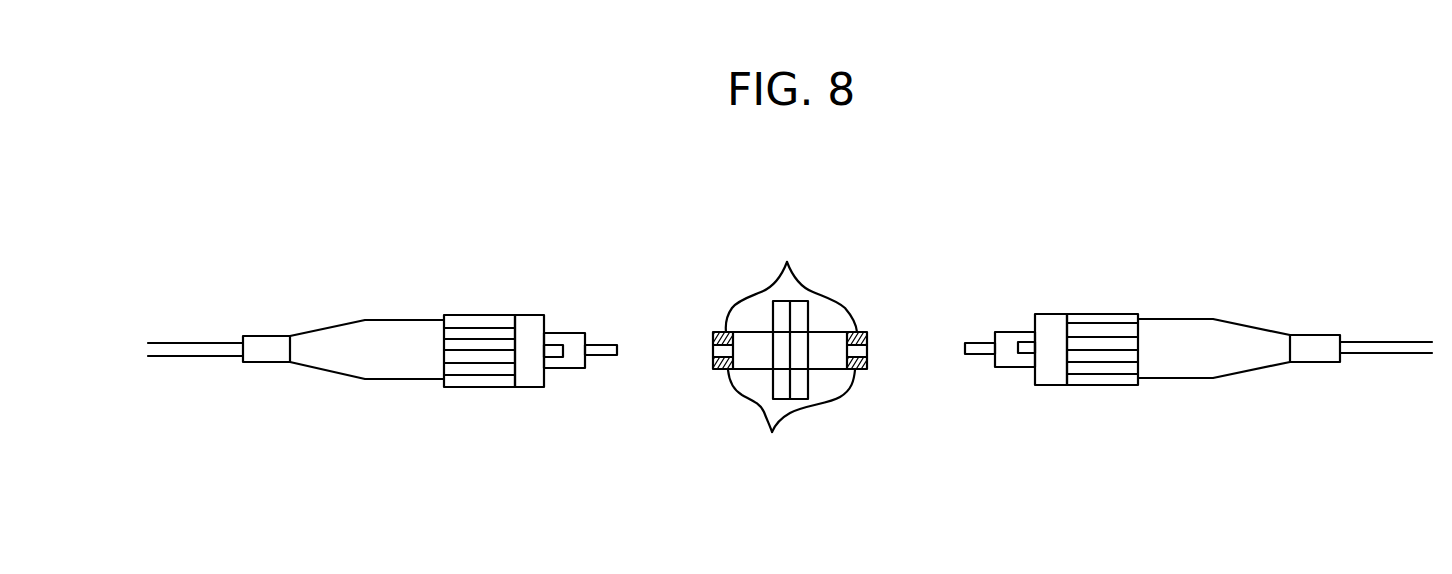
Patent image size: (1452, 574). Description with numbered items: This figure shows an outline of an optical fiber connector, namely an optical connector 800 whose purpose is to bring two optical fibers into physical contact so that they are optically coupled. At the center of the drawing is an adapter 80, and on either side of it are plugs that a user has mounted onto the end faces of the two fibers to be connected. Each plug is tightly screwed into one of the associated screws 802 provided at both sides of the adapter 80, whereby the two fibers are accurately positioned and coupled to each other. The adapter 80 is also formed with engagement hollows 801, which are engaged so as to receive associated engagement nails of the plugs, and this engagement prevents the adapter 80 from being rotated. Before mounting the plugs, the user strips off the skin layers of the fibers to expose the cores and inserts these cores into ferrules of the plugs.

The optical connector 800 is at (1073, 200).
The adapter 80 is at (855, 392).
The engagement hollows 801 is at (791, 278).
The screws 802 is at (791, 386).